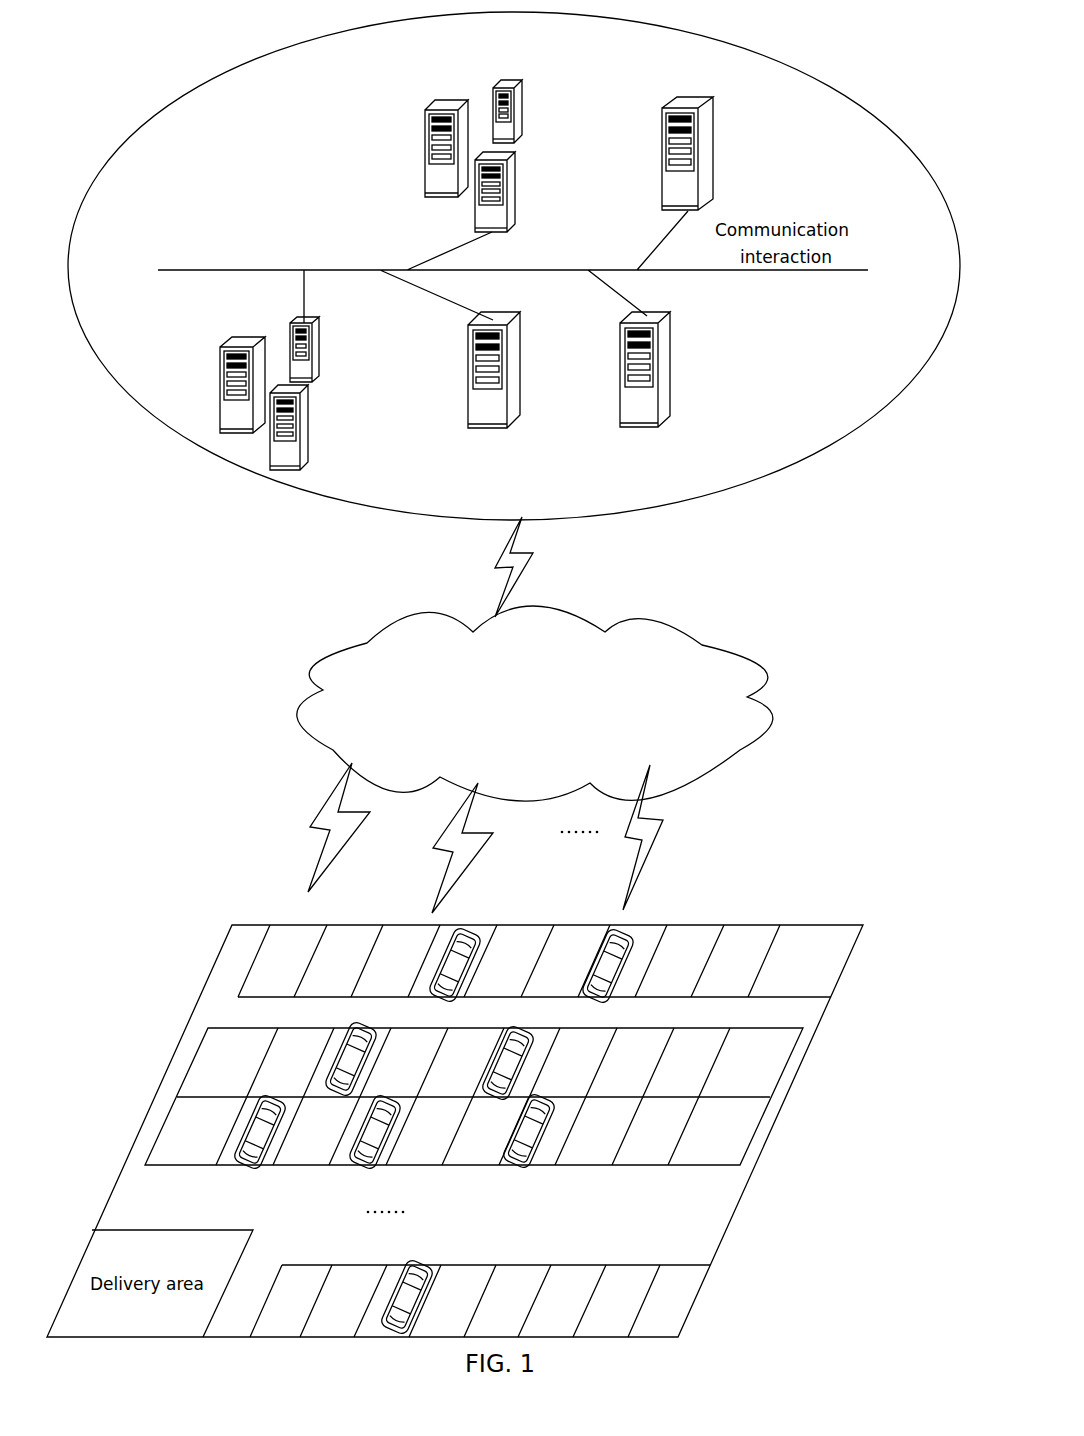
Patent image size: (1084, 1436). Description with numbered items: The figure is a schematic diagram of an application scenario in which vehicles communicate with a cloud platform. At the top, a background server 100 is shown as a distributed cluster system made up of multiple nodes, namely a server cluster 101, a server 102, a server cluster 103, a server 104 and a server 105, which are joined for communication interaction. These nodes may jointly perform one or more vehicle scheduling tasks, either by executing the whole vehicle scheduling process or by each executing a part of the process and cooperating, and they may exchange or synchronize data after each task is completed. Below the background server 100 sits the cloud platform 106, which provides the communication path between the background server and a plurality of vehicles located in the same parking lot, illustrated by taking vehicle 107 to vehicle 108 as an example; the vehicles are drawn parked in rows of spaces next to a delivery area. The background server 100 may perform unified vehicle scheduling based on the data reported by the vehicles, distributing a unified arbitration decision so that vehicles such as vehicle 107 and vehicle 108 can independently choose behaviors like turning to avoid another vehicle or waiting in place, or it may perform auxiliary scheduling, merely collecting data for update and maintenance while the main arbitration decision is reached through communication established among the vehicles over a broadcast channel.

The background server 100 is at (558, 28).
The server cluster 101 is at (520, 82).
The server 102 is at (700, 182).
The server cluster 103 is at (320, 347).
The server 104 is at (504, 313).
The server 105 is at (662, 330).
The cloud platform 106 is at (558, 618).
The vehicle 107 is at (620, 945).
The vehicle 108 is at (467, 925).